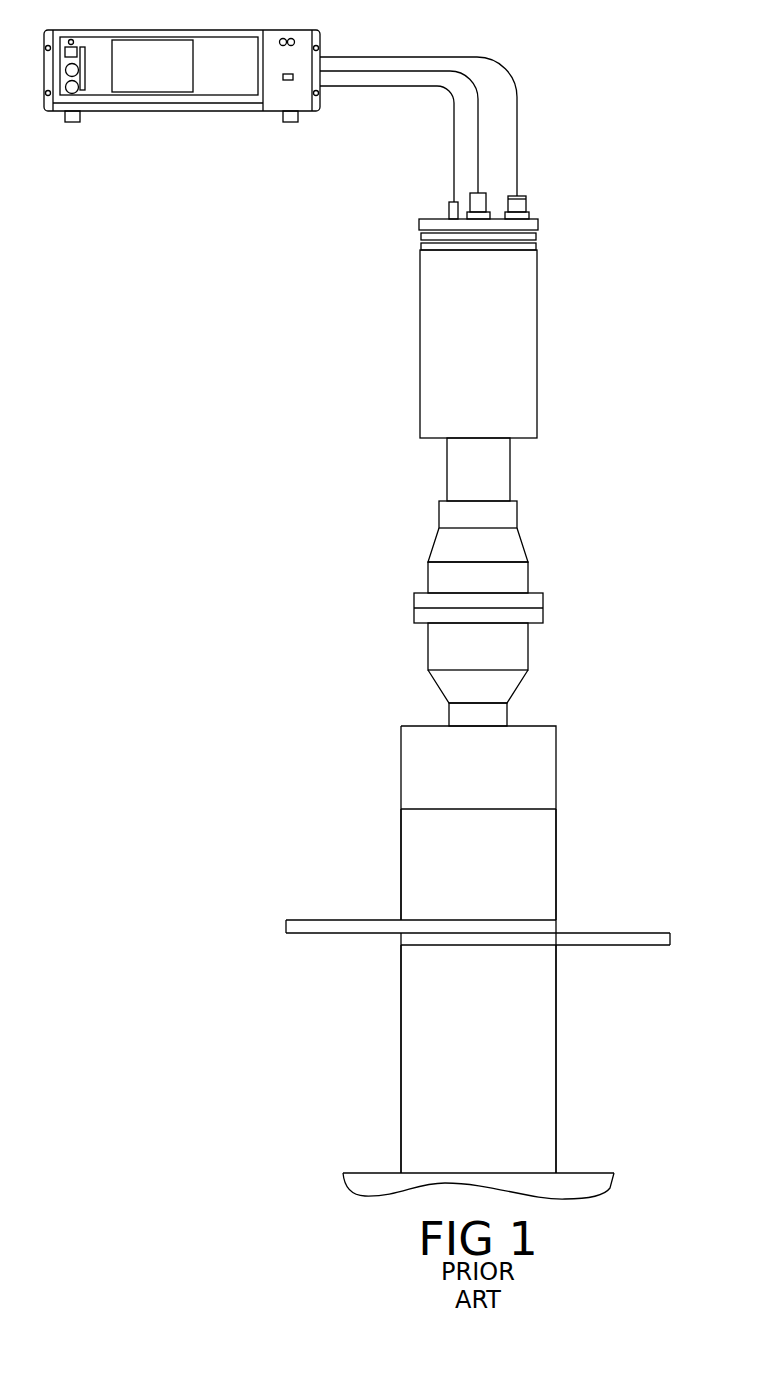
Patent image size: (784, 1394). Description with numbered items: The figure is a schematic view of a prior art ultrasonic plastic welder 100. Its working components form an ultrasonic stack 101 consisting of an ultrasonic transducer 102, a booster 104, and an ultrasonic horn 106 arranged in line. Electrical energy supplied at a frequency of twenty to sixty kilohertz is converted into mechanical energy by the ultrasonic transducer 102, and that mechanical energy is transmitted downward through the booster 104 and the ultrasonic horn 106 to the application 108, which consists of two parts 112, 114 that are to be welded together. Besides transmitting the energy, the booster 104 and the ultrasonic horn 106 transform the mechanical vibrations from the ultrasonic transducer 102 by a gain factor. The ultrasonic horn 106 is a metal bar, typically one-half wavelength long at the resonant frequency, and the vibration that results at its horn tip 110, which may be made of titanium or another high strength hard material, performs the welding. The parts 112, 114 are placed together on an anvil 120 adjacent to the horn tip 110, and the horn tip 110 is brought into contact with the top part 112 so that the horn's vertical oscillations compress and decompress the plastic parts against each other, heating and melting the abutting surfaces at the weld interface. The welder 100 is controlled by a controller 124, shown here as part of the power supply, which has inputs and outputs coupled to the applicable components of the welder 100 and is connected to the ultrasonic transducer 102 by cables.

The ultrasonic plastic welder 100 is at (607, 80).
The ultrasonic stack 101 is at (350, 452).
The ultrasonic transducer 102 is at (537, 345).
The booster 104 is at (543, 607).
The ultrasonic horn 106 is at (556, 767).
The application 108 is at (348, 978).
The horn tip 110 is at (401, 866).
The top part 112 is at (297, 933).
The part 114 is at (653, 945).
The anvil 120 is at (556, 1058).
The controller 124 is at (320, 45).